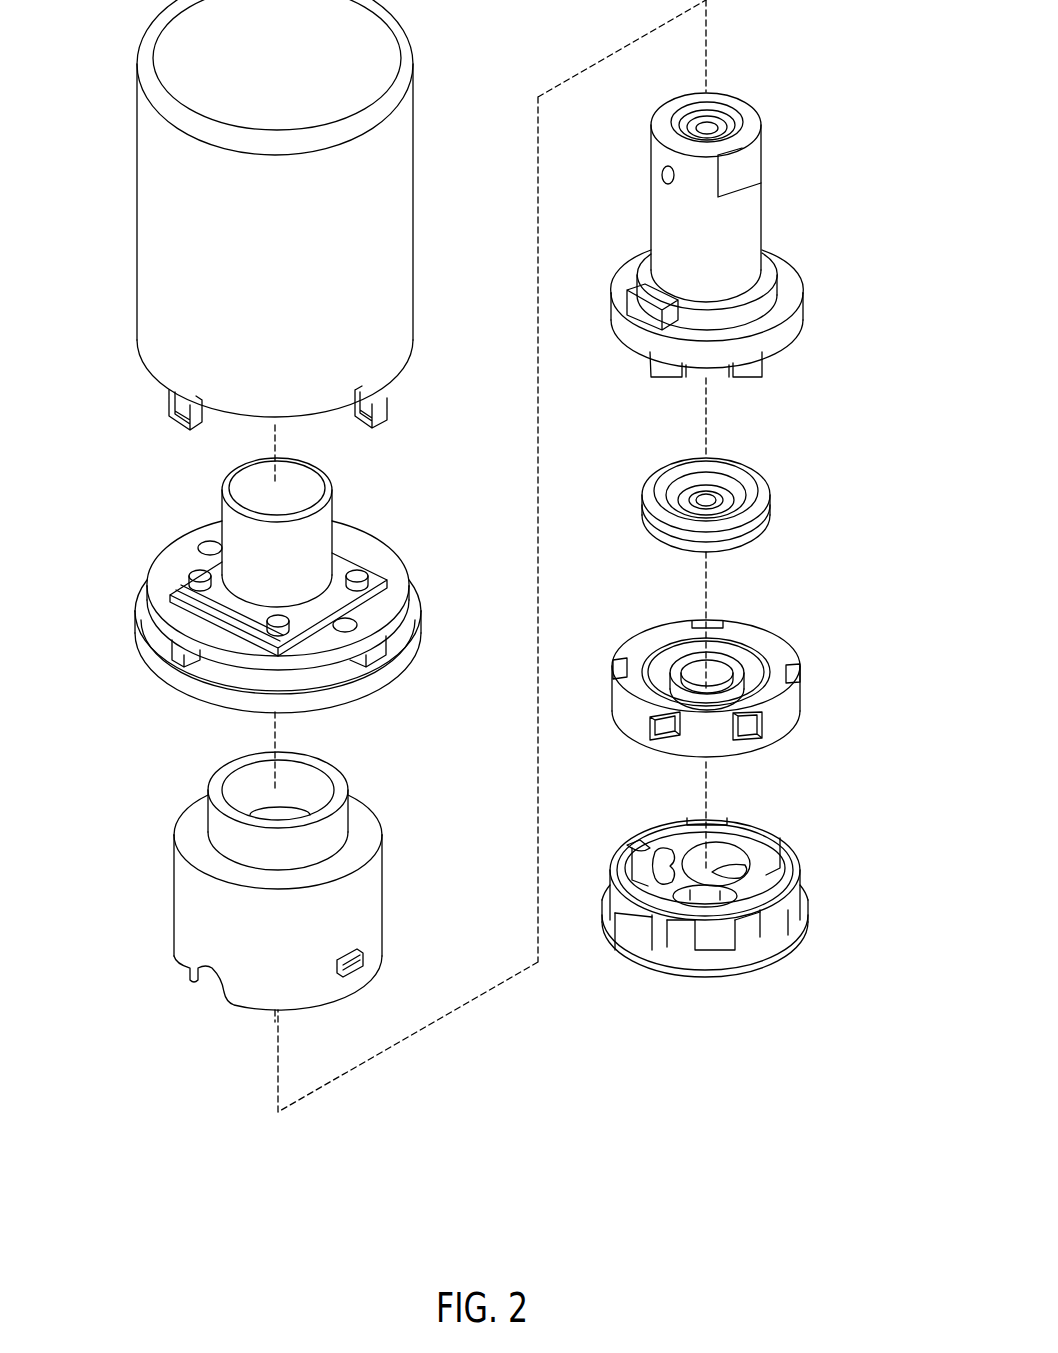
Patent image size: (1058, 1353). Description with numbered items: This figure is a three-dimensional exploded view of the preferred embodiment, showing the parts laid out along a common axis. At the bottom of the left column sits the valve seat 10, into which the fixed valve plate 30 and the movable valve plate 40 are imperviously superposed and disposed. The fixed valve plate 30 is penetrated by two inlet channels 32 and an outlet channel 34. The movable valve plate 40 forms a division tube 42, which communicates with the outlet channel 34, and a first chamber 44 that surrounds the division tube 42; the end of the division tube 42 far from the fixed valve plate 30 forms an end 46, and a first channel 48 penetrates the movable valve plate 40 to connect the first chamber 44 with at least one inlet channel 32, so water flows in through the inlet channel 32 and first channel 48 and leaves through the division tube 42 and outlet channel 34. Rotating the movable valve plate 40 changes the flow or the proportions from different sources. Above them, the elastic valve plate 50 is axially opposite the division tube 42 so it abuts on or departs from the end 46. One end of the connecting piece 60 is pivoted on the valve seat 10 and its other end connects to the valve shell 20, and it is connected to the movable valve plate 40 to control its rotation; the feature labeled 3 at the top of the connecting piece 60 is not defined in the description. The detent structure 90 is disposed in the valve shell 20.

The hole of column 3 is at (738, 112).
The valve seat 10 is at (175, 895).
The valve shell 20 is at (134, 230).
The fixed valve plate 30 is at (717, 905).
The inlet channel 32 is at (628, 845).
The outlet channel 34 is at (793, 872).
The movable valve plate 40 is at (738, 703).
The division tube 42 is at (747, 680).
The first chamber 44 is at (660, 683).
The end 46 is at (742, 667).
The first channel 48 is at (687, 708).
The valve plate 50 is at (771, 498).
The connecting piece 60 is at (763, 210).
The detent structure 90 is at (222, 519).